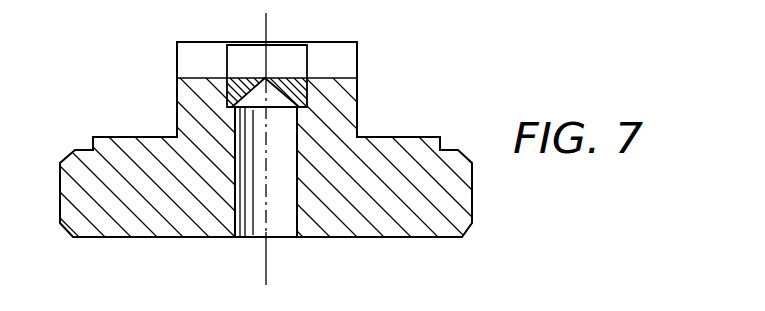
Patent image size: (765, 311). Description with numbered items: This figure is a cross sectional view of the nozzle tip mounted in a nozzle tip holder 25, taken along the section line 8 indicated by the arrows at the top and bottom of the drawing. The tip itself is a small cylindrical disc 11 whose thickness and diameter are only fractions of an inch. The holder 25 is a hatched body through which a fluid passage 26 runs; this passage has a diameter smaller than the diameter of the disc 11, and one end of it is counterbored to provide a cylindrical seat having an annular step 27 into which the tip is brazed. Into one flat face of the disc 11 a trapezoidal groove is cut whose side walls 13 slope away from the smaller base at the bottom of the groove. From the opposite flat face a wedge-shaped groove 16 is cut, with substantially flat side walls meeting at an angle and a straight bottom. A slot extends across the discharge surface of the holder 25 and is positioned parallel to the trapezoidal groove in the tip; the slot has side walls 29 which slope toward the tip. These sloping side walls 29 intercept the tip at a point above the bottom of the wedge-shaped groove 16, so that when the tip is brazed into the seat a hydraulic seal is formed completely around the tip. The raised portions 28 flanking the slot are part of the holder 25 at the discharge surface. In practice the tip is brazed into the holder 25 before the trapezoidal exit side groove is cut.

The section line 8- 8 is at (267, 15).
The disc 11 is at (310, 58).
The side walls of the trapezoidal groove 13 is at (248, 53).
The wedge-shaped groove 16 is at (261, 116).
The holder 25 is at (413, 136).
The fluid passage 26 is at (252, 232).
The annular step 27 is at (232, 108).
The left flange 28 is at (190, 42).
The side walls of the slot 29 is at (357, 47).